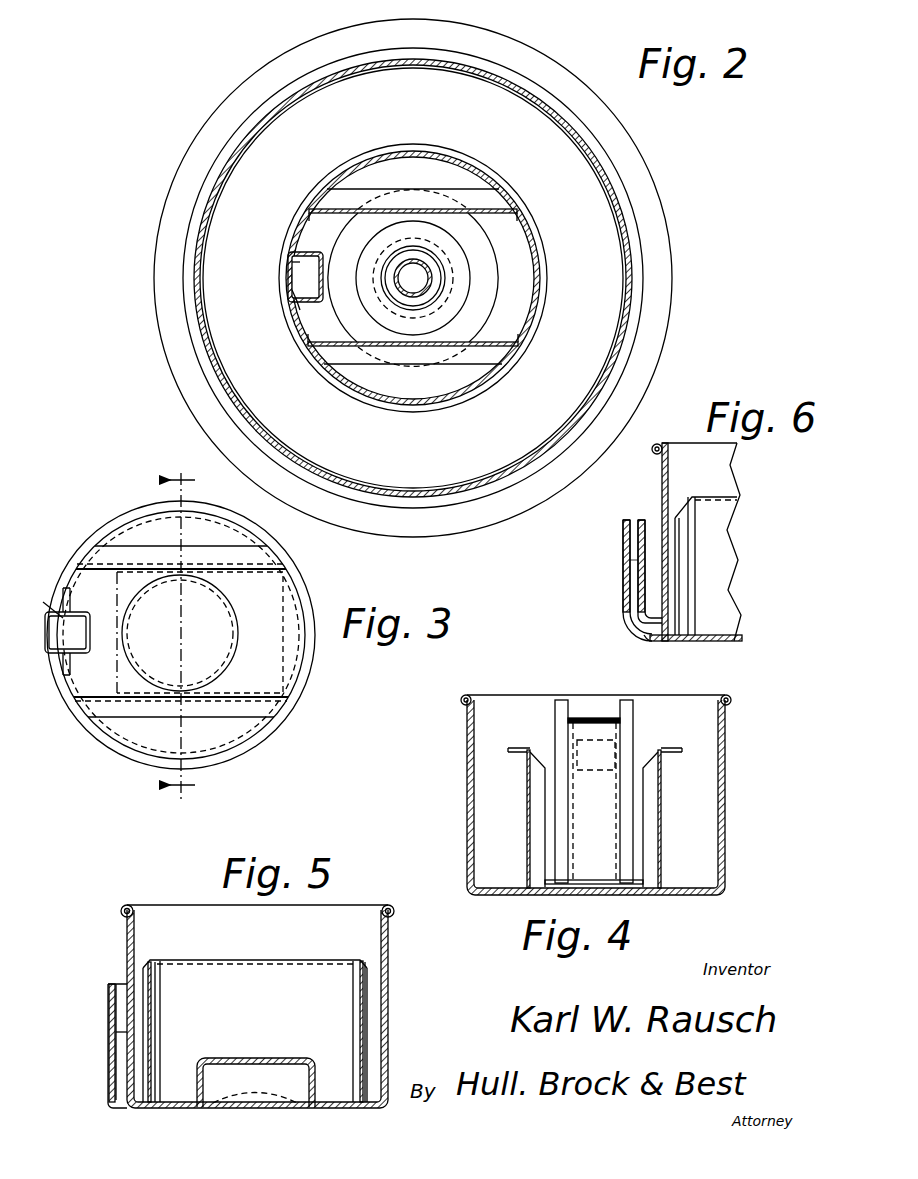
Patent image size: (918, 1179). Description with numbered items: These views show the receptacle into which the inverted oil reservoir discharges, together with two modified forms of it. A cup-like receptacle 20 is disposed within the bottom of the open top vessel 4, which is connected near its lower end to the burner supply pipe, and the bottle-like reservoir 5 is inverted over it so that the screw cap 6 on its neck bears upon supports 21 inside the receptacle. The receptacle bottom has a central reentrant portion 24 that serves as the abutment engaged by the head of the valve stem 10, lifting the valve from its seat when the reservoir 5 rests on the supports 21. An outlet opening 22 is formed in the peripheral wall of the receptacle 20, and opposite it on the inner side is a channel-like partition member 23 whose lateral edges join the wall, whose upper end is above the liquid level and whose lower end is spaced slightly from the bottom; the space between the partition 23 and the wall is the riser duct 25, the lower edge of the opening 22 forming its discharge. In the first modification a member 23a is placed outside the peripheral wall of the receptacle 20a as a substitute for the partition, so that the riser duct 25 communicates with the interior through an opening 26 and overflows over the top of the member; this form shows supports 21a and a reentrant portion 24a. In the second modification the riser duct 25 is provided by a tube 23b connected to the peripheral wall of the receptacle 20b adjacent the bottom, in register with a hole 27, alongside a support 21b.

In FIG. 2, the open top vessel 4 is at (626, 205).
In FIG. 3, the open top vessel 4 is at (186, 634).
In FIG. 2, the reservoir 5 is at (413, 278).
In FIG. 2, the screw cap 6 is at (490, 250).
In FIG. 2, the valve stem 10 is at (428, 283).
In FIG. 2, the cup-like receptacle 20 is at (540, 297).
In FIG. 3, the cup-like receptacle 20 is at (247, 741).
In FIG. 4, the cup-like receptacle 20 is at (467, 757).
In FIG. 5, the receptacle 20a is at (388, 963).
In FIG. 6, the receptacle 20b is at (662, 490).
In FIG. 2, the supports 21 is at (405, 205).
In FIG. 3, the supports 21 is at (213, 566).
In FIG. 4, the supports 21 is at (527, 790).
In FIG. 5, the guide bar (modified) 21a is at (292, 975).
In FIG. 6, the guide bar (modified) 21b is at (711, 513).
In FIG. 2, the outlet opening 22 is at (289, 291).
In FIG. 3, the outlet opening 22 is at (53, 645).
In FIG. 4, the outlet opening 22 is at (615, 745).
In FIG. 2, the channel-like partition member 23 is at (325, 273).
In FIG. 3, the channel-like partition member 23 is at (92, 618).
In FIG. 4, the channel-like partition member 23 is at (594, 792).
In FIG. 5, the member 23a is at (108, 1075).
In FIG. 6, the tube 23b is at (623, 612).
In FIG. 3, the central reentrant portion 24 is at (228, 622).
In FIG. 5, the central boss (modified) 24a is at (253, 1059).
In FIG. 2, the riser duct 25 is at (296, 268).
In FIG. 3, the riser duct 25 is at (41, 599).
In FIG. 5, the riser duct 25 is at (118, 1032).
In FIG. 6, the riser duct 25 is at (623, 560).
In FIG. 5, the opening 26 is at (108, 1098).
In FIG. 6, the hole 27 is at (648, 642).